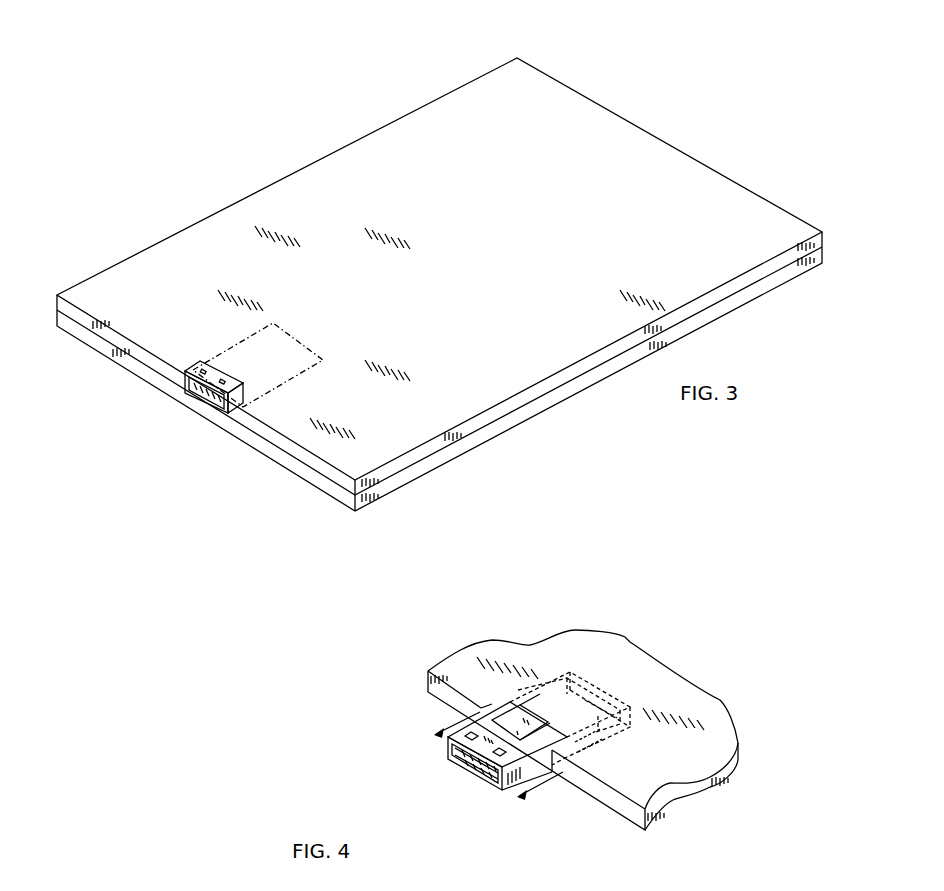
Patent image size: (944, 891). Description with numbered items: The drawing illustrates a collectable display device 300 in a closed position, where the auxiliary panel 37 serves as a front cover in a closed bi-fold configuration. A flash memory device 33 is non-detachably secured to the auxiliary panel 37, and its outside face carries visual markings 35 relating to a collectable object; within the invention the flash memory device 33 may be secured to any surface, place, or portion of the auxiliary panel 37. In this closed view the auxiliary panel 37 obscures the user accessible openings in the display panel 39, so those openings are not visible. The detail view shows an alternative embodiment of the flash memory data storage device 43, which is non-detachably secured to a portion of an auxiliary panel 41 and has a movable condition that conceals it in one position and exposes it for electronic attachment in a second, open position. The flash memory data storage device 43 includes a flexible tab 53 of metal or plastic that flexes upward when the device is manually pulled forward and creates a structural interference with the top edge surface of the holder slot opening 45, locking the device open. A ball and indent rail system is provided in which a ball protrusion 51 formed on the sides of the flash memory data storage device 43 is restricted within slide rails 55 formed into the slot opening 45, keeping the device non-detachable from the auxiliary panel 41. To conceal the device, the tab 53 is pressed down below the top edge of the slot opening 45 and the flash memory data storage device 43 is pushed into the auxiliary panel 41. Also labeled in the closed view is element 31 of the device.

In FIG. 3, the collectable display device 300 is at (303, 141).
In FIG. 3, the USB connector 31 is at (207, 393).
In FIG. 3, the flash memory device 33 is at (235, 362).
In FIG. 3, the visual markings 35 is at (505, 163).
In FIG. 3, the auxiliary panel 37 is at (186, 258).
In FIG. 3, the display panel 39 is at (480, 437).
In FIG. 4, the auxiliary panel 41 is at (646, 673).
In FIG. 4, the flash memory data storage device 43 is at (467, 768).
In FIG. 4, the slot opening 45 is at (478, 712).
In FIG. 4, the ball protrusion 51 is at (583, 748).
In FIG. 4, the flexible tab 53 is at (507, 723).
In FIG. 4, the slide rails 55 is at (612, 728).